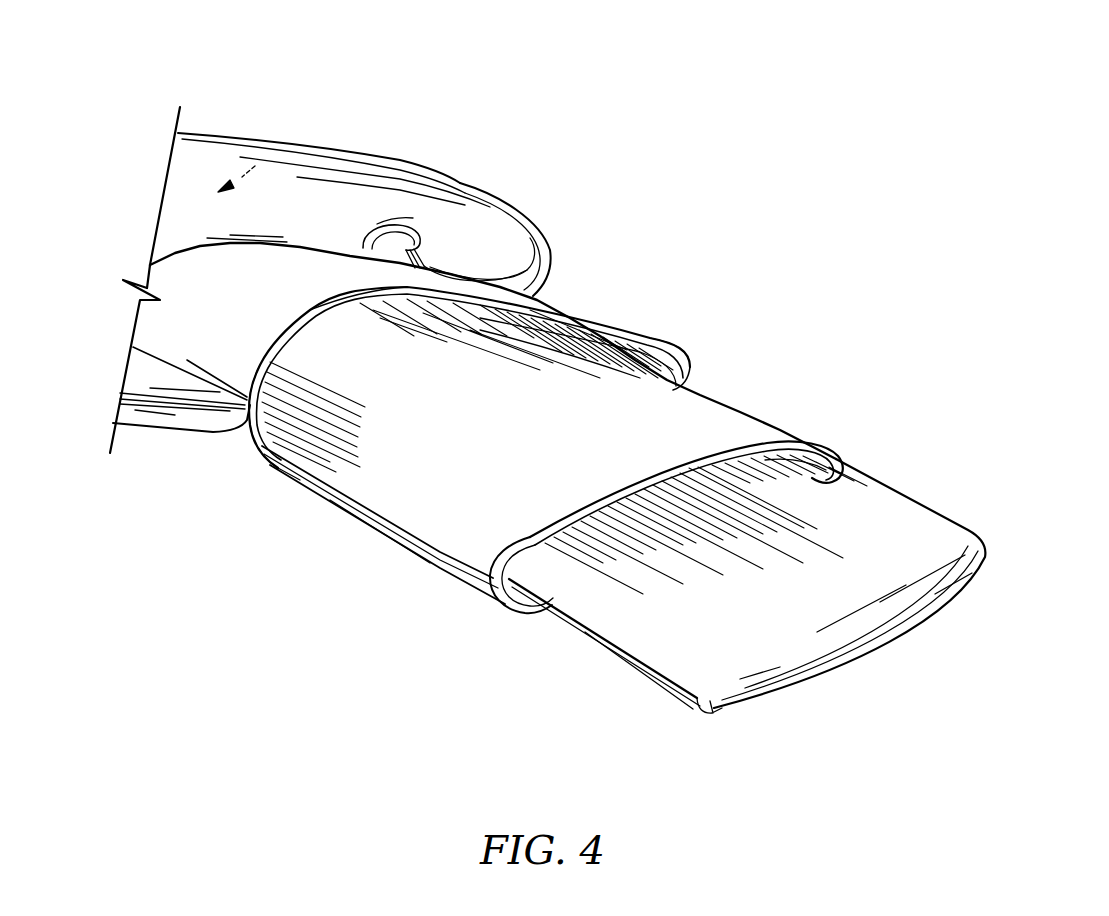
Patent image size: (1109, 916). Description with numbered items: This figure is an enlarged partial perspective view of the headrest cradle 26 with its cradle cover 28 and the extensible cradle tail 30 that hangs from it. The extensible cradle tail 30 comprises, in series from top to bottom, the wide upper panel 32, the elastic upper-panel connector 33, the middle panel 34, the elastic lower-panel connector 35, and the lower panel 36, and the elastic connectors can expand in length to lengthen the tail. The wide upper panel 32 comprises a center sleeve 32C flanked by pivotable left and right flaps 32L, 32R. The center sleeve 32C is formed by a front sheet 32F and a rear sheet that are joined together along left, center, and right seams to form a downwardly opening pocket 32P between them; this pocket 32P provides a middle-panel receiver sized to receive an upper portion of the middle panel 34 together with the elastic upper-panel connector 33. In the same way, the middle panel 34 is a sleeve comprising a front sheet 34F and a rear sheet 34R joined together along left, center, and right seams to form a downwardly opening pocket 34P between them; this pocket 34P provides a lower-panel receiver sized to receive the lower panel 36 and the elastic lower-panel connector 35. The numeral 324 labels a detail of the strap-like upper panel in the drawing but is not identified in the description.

The headrest cradle 26 is at (266, 263).
The cradle cover 28 is at (483, 181).
The extensible cradle tail 30 is at (776, 171).
The wide upper panel 32 is at (647, 331).
The front sheet 32F is at (268, 264).
The center sleeve 32C is at (332, 290).
The left flap 32L is at (158, 393).
The right flap 32R is at (268, 467).
The downwardly opening pocket 32P is at (342, 359).
The elastic upper-panel connector 33 is at (247, 333).
The middle panel 34 is at (803, 434).
The front sheet 34F is at (547, 417).
The downwardly opening pocket 34P is at (593, 528).
The rear sheet 34R is at (508, 610).
The strap loop end 324 is at (695, 352).
The elastic lower-panel connector 35 is at (488, 497).
The lower panel 36 is at (908, 508).